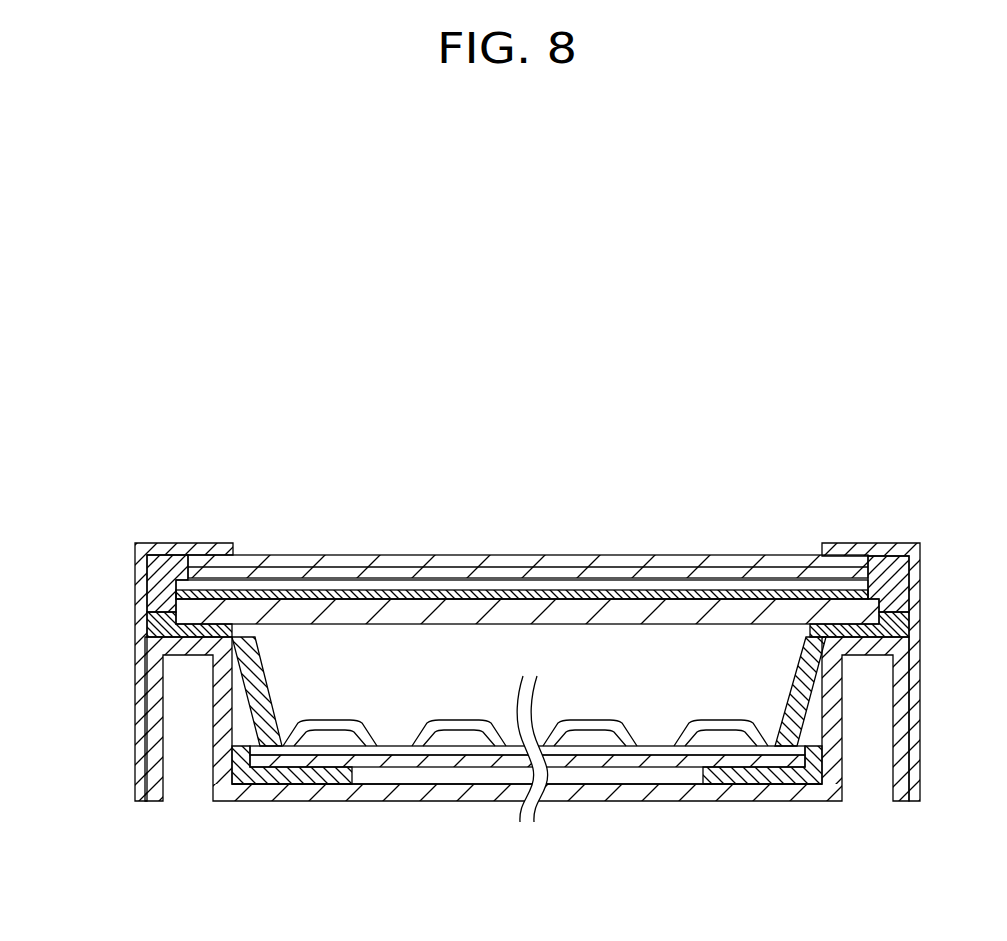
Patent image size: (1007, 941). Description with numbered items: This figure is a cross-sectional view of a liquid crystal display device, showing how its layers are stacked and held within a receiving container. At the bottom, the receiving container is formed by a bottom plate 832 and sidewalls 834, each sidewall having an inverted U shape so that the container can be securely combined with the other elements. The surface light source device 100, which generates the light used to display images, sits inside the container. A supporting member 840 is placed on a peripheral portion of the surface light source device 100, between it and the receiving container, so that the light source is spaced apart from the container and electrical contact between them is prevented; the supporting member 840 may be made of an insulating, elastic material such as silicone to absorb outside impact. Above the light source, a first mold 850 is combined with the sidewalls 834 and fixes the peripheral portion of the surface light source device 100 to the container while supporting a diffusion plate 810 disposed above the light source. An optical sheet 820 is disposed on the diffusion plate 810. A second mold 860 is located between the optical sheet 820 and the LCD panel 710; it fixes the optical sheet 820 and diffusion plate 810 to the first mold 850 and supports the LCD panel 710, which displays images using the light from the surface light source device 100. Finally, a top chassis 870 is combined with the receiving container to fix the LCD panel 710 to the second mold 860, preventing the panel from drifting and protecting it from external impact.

The surface light source device 100 is at (476, 763).
The LCD panel 710 is at (460, 562).
The diffusion plate 810 is at (713, 613).
The optical sheet 820 is at (628, 593).
The bottom plate 832 is at (392, 793).
The sidewalls 834 is at (187, 653).
The supporting member 840 is at (282, 770).
The first mold 850 is at (155, 627).
The second mold 860 is at (153, 592).
The top chassis 870 is at (155, 548).